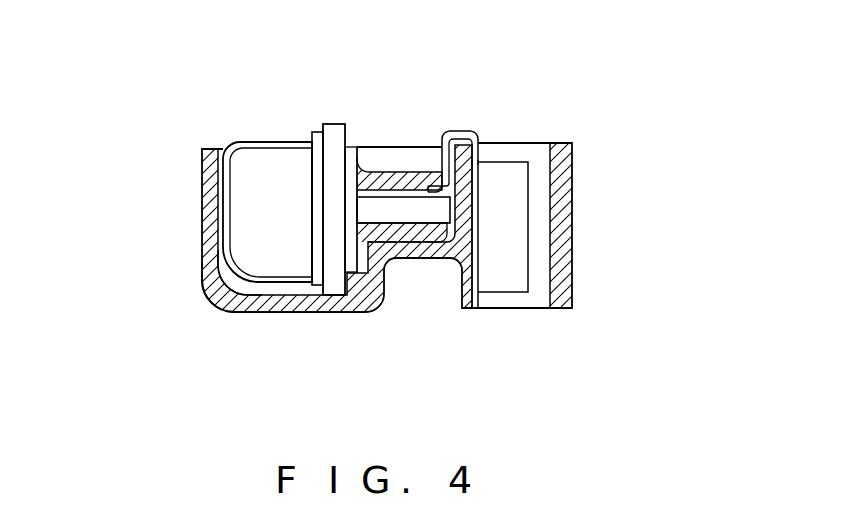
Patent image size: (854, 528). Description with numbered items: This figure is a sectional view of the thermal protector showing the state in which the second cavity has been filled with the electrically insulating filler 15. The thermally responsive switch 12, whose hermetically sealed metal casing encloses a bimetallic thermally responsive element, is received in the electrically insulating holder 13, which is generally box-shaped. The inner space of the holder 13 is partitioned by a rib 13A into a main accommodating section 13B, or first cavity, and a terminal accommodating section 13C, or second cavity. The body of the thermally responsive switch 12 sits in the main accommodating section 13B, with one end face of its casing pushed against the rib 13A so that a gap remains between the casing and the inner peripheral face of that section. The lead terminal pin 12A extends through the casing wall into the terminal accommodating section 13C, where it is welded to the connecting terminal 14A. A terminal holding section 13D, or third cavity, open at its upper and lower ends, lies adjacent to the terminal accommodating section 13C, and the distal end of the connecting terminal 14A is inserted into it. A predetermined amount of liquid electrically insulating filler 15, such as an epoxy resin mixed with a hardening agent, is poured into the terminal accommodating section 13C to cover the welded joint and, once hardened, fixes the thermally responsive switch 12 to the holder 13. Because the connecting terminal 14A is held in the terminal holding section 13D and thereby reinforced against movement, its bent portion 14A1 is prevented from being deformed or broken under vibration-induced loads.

The thermally responsive switch 12 is at (275, 157).
The lead terminal pin 12A is at (423, 212).
The electrically insulating holder 13 is at (200, 212).
The rib 13A is at (362, 150).
The main accommodating section 13B is at (237, 280).
The terminal accommodating section 13C is at (412, 143).
The terminal holding section 13D is at (562, 185).
The connecting terminal 14A is at (498, 270).
The bent portion 14A1 is at (467, 131).
The electrically insulating filler 15 is at (394, 228).